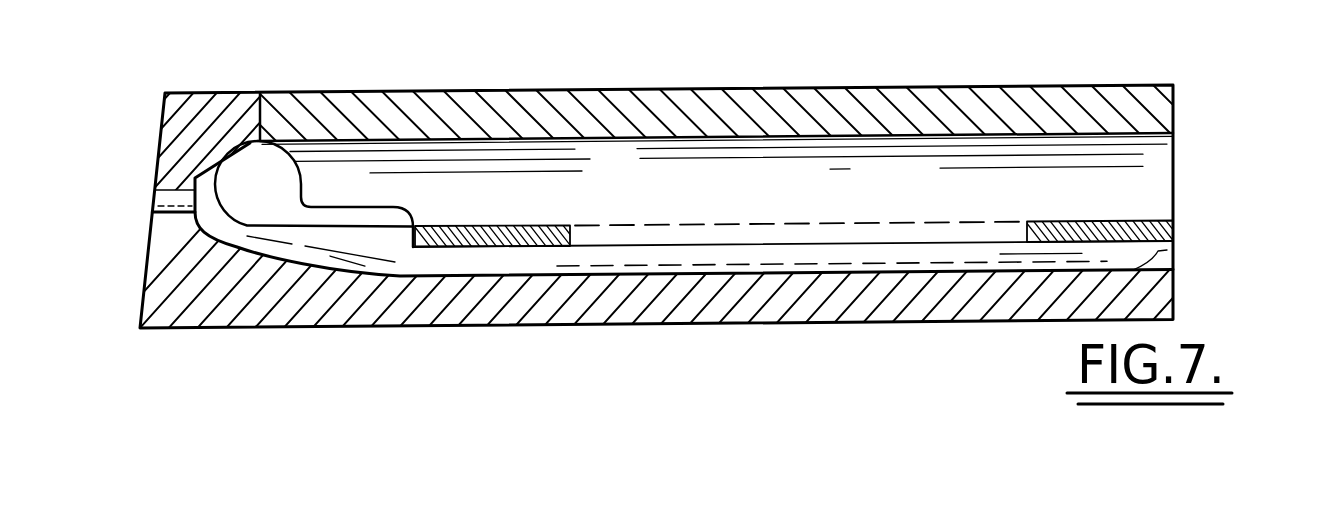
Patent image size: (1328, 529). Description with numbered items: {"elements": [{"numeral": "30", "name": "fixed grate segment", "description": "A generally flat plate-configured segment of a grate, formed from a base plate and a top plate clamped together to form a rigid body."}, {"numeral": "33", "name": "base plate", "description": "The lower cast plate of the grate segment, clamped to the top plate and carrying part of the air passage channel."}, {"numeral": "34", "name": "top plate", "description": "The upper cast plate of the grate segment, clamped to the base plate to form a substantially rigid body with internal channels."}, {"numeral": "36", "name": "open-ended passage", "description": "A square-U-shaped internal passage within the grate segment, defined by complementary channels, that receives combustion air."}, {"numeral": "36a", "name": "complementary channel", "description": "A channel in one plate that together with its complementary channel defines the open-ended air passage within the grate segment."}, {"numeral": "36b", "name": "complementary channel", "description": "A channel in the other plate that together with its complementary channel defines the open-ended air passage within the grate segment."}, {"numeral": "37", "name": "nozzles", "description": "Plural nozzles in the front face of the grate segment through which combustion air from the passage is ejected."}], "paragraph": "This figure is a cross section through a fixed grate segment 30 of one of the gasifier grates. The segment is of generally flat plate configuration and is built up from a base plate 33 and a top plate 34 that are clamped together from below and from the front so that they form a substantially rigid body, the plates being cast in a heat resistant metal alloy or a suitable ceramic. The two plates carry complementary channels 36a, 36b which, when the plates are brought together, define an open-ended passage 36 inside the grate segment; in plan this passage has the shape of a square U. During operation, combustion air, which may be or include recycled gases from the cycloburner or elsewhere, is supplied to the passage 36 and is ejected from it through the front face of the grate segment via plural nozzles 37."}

The fluid distribution body 30 is at (1180, 112).
The lower body section 33 is at (408, 294).
The upper body section 34 is at (808, 88).
The flow chamber 36 is at (262, 178).
The lower flow passage 36a is at (1175, 248).
The insert / partition 36b is at (849, 222).
The inlet port 37 is at (162, 213).